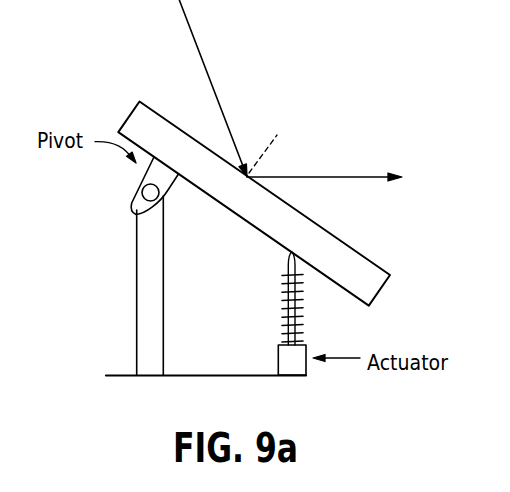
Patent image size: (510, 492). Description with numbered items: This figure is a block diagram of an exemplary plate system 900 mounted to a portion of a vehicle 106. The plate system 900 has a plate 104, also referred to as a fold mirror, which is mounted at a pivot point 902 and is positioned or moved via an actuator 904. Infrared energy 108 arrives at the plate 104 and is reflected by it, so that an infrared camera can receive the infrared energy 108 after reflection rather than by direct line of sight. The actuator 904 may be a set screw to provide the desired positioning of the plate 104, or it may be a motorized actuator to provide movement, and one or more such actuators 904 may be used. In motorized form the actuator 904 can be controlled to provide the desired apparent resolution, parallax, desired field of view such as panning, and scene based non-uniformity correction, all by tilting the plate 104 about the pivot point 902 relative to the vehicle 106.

The plate 104 is at (375, 264).
The vehicle 106 is at (136, 311).
The infrared energy 108 is at (228, 76).
The plate system 900 is at (66, 390).
The pivot point 902 is at (110, 209).
The actuator 904 is at (262, 355).